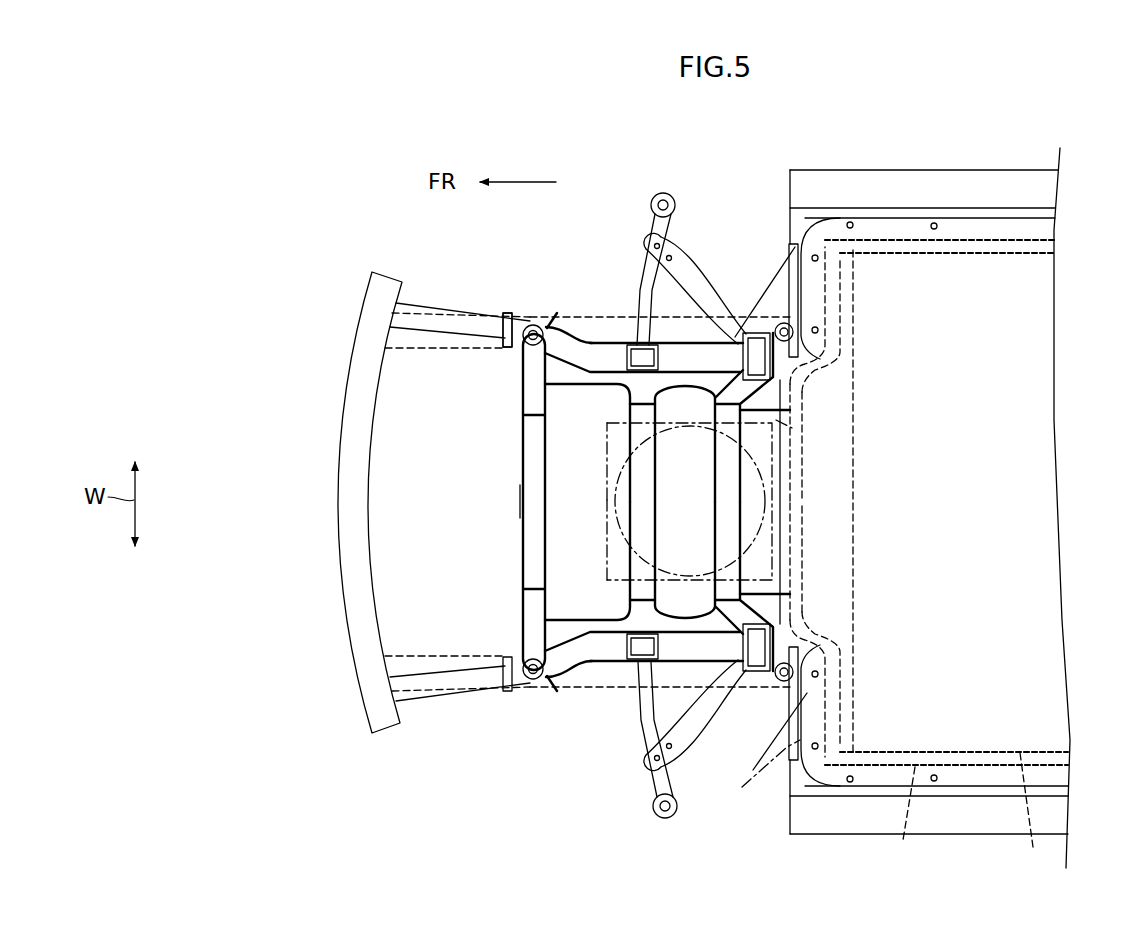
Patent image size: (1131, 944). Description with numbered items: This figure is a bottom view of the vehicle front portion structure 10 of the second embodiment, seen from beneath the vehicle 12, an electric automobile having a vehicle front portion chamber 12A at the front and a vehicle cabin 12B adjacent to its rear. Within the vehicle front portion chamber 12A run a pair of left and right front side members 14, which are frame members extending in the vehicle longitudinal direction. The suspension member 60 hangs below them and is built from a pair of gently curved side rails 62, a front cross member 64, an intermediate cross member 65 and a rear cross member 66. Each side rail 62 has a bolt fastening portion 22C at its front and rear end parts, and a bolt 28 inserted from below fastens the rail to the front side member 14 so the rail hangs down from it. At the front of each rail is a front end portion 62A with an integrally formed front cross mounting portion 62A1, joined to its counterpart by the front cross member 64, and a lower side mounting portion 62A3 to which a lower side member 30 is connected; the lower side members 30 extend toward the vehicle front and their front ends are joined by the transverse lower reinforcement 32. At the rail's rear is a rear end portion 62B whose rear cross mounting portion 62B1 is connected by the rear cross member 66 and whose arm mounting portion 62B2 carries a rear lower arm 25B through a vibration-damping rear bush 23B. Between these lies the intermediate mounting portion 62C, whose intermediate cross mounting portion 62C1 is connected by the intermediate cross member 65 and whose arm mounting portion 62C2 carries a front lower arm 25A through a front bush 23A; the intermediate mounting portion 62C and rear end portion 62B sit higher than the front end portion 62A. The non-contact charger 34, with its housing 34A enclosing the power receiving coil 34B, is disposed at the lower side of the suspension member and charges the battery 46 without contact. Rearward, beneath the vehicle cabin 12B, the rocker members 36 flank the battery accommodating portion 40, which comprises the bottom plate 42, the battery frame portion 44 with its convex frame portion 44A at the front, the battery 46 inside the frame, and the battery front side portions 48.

The vehicle front structure 10 is at (290, 148).
The vehicle 12 is at (1057, 136).
The vehicle front portion chamber 12A is at (688, 152).
The vehicle cabin 12B is at (975, 152).
The front side member 14 is at (563, 318).
The bolt fastening portion 22C is at (551, 318).
The front bush 23A is at (697, 296).
The rear bush 23B is at (757, 347).
The front lower arm 25A is at (648, 258).
The rear lower arm 25B is at (690, 246).
The bolt 28 is at (530, 327).
The lower side member 30 is at (410, 306).
The lower reinforcement 32 is at (337, 447).
The non-contact charger 34 is at (700, 501).
The housing 34A is at (610, 502).
The power receiving coil 34B is at (612, 470).
The rocker member 36 is at (927, 171).
The battery accommodating portion 40 is at (854, 158).
The bottom plate 42 is at (780, 473).
The battery frame portion 44 is at (905, 820).
The convex frame portion 44A is at (784, 425).
The battery 46 is at (879, 807).
The battery front side portion 48 is at (765, 280).
The suspension member 60 is at (604, 341).
The side rail 62 is at (659, 502).
The front end portion 62A is at (465, 502).
The front cross mounting portion 62A1 is at (523, 432).
The lower side mounting portion 62A3 is at (487, 350).
The rear end portion 62B is at (837, 502).
The rear cross mounting portion 62B1 is at (782, 412).
The arm mounting portion 62B2 is at (812, 368).
The intermediate mounting portion 62C is at (601, 502).
The intermediate cross mounting portion 62C1 is at (548, 450).
The arm mounting portion 62C2 is at (590, 373).
The front cross member 64 is at (522, 499).
The intermediate cross member 65 is at (656, 531).
The rear cross member 66 is at (740, 500).